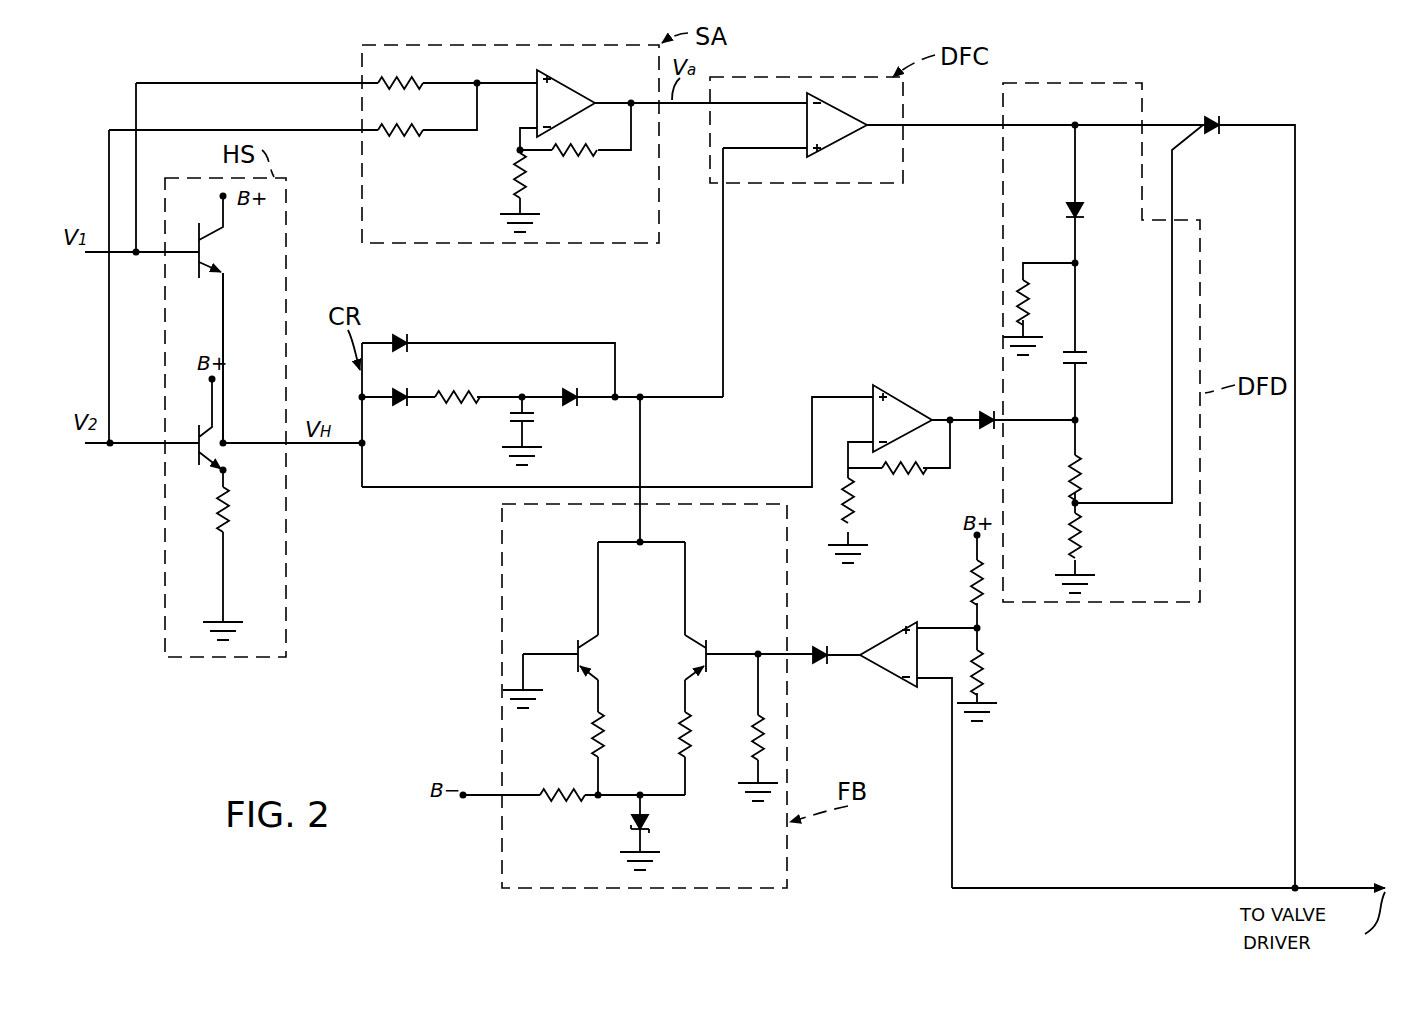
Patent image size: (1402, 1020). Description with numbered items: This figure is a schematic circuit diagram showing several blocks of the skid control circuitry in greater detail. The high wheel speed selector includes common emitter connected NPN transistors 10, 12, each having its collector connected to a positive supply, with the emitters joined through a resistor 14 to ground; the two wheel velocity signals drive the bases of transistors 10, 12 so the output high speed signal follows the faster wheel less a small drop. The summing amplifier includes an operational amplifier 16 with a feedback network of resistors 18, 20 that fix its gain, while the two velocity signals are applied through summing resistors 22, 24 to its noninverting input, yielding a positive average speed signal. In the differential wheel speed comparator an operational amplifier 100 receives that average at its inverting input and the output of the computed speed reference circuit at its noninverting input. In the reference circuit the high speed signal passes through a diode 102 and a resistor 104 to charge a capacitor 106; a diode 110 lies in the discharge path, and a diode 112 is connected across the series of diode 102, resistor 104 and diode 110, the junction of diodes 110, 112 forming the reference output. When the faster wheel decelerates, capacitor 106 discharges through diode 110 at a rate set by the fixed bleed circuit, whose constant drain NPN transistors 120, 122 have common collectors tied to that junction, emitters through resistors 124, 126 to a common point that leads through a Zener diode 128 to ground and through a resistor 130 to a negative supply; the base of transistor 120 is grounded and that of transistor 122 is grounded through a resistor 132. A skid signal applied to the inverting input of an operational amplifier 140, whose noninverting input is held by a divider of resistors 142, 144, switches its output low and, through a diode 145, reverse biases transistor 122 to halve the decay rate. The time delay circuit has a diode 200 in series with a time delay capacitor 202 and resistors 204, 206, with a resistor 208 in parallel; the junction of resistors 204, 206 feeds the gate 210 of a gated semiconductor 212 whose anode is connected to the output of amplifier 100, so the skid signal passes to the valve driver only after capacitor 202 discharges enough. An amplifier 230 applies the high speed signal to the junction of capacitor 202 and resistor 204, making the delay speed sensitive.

The NPN transistor 10 is at (227, 249).
The NPN transistor 12 is at (227, 424).
The resistor 14 is at (222, 524).
The operational amplifier 16 is at (582, 92).
The feedback resistor 18 is at (582, 160).
The feedback resistor 20 is at (517, 174).
The summing resistor 22 is at (420, 81).
The summing resistor 24 is at (405, 143).
The operational amplifier 100 is at (844, 118).
The diode 102 is at (406, 411).
The resistor 104 is at (460, 405).
The capacitor 106 is at (510, 432).
The diode 110 is at (576, 406).
The diode 112 is at (406, 334).
The NPN transistor 120 is at (596, 656).
The NPN transistor 122 is at (704, 659).
The resistor 124 is at (605, 734).
The resistor 126 is at (688, 749).
The Zener diode 128 is at (652, 828).
The resistor 130 is at (570, 788).
The resistor 132 is at (753, 726).
The operational amplifier 140 is at (900, 636).
The resistor 142 is at (973, 571).
The resistor 144 is at (989, 674).
The diode 145 is at (822, 646).
The diode 200 is at (1105, 200).
The time delay capacitor 202 is at (1087, 356).
The resistor 204 is at (1080, 487).
The resistor 206 is at (1083, 532).
The resistor 208 is at (1040, 312).
The gate 210 is at (1187, 146).
The gated semiconductor 212 is at (1210, 118).
The amplifier 230 is at (922, 395).